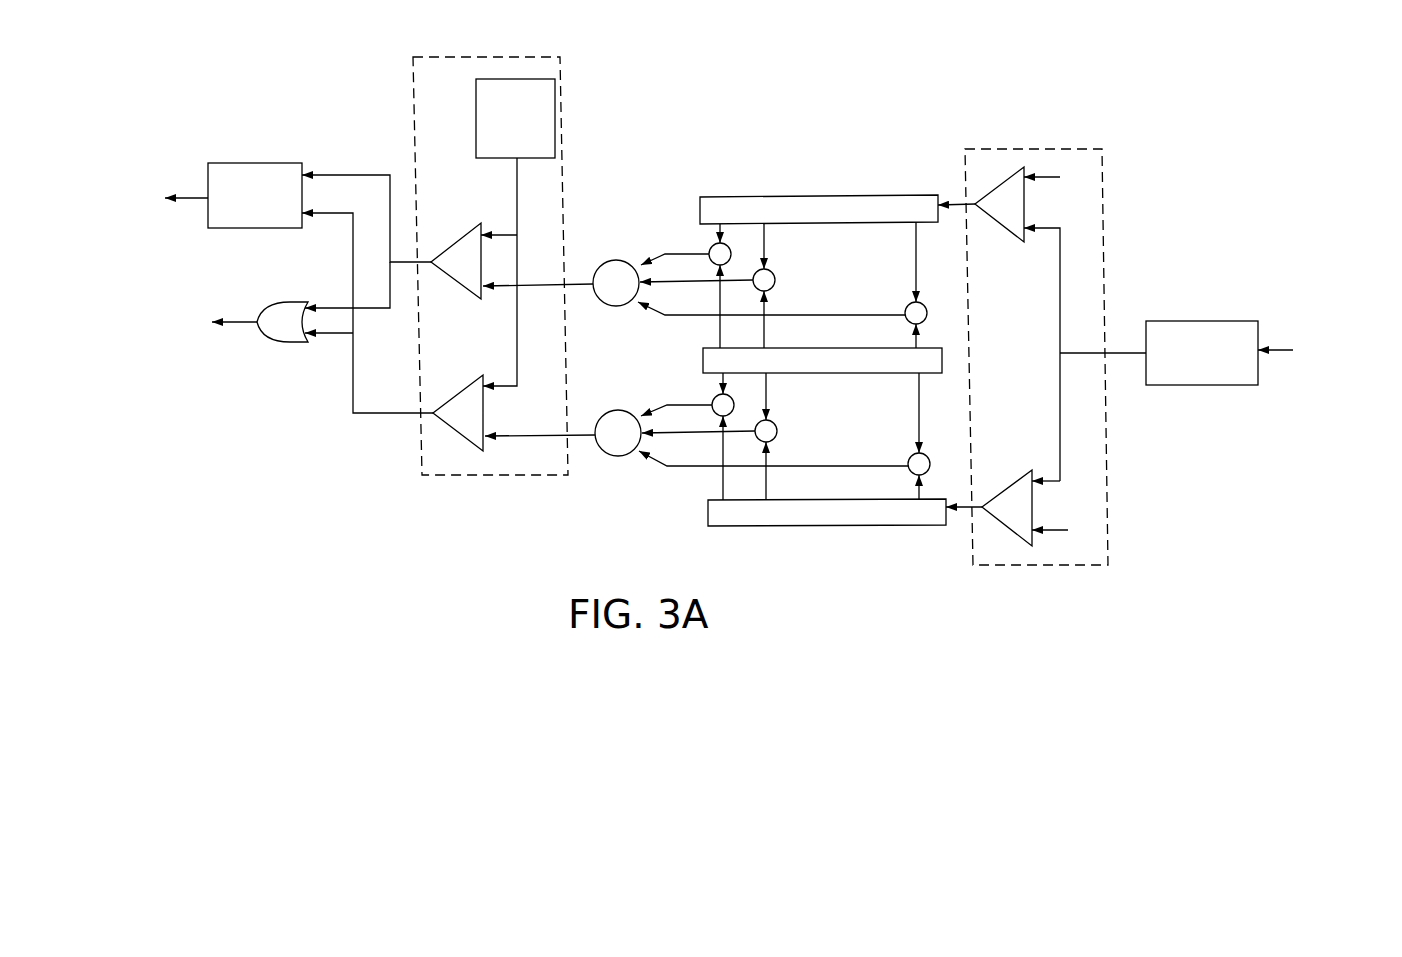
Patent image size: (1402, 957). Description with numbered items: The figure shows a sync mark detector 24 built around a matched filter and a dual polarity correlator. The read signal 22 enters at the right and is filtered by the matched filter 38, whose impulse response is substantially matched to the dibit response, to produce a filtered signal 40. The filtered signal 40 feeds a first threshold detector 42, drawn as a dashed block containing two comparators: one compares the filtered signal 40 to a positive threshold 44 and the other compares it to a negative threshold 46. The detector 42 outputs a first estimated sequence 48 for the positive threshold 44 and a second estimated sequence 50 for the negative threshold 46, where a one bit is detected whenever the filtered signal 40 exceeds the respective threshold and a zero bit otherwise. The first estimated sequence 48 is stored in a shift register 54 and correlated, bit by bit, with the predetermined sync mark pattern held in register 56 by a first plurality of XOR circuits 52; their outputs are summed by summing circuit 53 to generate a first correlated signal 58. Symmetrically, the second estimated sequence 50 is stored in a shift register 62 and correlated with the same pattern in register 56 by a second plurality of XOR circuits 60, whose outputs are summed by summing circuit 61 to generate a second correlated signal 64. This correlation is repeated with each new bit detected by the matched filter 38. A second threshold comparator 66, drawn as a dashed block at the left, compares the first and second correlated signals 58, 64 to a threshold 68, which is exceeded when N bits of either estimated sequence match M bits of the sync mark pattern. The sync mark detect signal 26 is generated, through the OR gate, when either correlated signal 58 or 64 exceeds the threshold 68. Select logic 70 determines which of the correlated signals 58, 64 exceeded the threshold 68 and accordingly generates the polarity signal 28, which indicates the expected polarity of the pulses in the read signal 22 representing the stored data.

The read signal 22 is at (1282, 348).
The sync mark detector 24 is at (198, 87).
The sync mark detect signal 26 is at (245, 320).
The polarity signal 28 is at (190, 196).
The matched filter 38 is at (1201, 320).
The filtered signal 40 is at (1120, 350).
The first threshold detector 42 is at (1021, 148).
The positive threshold 44 is at (1040, 182).
The negative threshold 46 is at (1048, 527).
The first estimated sequence 48 is at (960, 200).
The second estimated sequence 50 is at (962, 512).
The XOR circuits 52 is at (906, 306).
The summing circuit 53 is at (613, 260).
The shift register 54 is at (700, 206).
The register 56 is at (703, 359).
The first correlated signal 58 is at (575, 290).
The XOR circuits 60 is at (908, 457).
The summing circuit 61 is at (617, 410).
The shift register 62 is at (708, 510).
The second correlated signal 64 is at (578, 438).
The second threshold comparator 66 is at (490, 243).
The threshold 68 is at (476, 119).
The select logic 70 is at (257, 162).